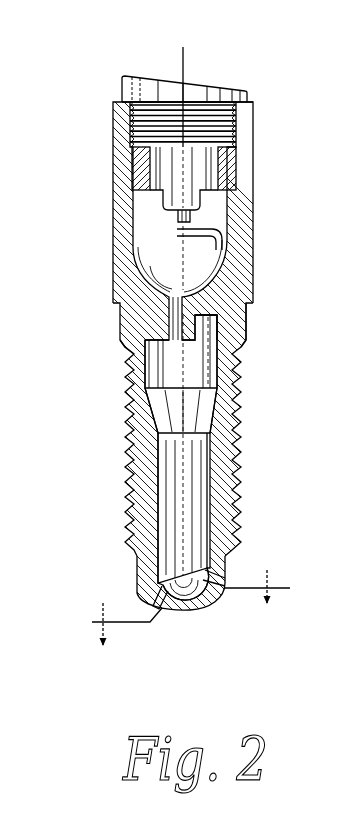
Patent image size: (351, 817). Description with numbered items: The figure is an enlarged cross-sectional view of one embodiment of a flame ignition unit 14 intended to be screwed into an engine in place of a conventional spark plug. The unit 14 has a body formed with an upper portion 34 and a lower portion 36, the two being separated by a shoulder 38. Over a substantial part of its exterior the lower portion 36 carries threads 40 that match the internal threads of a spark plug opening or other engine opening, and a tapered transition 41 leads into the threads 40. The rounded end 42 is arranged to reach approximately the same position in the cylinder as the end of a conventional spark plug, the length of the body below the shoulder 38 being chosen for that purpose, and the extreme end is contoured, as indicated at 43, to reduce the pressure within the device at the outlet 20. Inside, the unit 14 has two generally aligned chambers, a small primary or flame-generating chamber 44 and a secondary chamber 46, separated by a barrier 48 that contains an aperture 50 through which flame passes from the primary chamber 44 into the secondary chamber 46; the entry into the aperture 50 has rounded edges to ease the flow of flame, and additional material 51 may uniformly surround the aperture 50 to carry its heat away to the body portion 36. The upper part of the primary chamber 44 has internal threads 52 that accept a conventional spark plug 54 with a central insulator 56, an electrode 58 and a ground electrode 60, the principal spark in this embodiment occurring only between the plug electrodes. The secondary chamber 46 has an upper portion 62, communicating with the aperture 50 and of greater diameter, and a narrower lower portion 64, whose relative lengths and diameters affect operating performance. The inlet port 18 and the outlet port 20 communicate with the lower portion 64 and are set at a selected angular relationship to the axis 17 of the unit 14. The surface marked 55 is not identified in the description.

The flame ignition unit 14 is at (175, 343).
The axis 17 is at (183, 61).
The inlet port 18 is at (230, 597).
The outlet port 20 is at (167, 610).
The upper portion 34 is at (112, 137).
The lower portion 36 is at (246, 330).
The shoulder 38 is at (246, 308).
The threads 40 is at (240, 457).
The tapered transition 41 is at (122, 342).
The rounded end 42 is at (137, 548).
The contoured extreme end 43 is at (177, 610).
The primary chamber 44 is at (153, 275).
The secondary chamber 46 is at (177, 449).
The barrier 48 is at (217, 333).
The aperture 50 is at (163, 313).
The additional material 51 is at (199, 335).
The internal threads 52 is at (127, 122).
The spark plug 54 is at (116, 84).
The shell top face 55 is at (255, 102).
The central insulator 56 is at (170, 207).
The electrode 58 is at (177, 222).
The ground electrode 60 is at (177, 231).
The upper portion of secondary chamber 62 is at (155, 397).
The lower portion of secondary chamber 64 is at (158, 450).